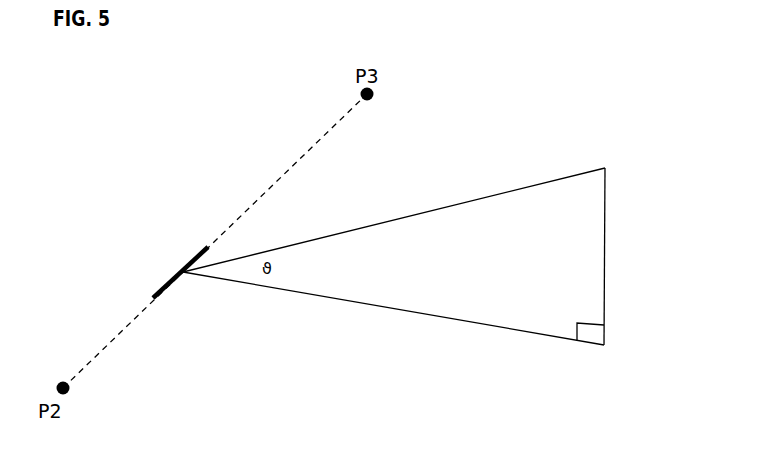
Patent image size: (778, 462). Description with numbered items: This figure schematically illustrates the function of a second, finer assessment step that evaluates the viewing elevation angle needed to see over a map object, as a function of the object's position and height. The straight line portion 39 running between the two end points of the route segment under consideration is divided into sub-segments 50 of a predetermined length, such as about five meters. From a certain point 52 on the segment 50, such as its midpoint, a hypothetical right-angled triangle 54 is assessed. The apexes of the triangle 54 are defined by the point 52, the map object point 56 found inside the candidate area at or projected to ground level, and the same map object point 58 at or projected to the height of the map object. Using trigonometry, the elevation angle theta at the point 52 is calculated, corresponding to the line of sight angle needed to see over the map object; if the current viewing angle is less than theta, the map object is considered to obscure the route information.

The straight line portion 39 is at (283, 177).
The sub-segment 50 is at (188, 247).
The point on the segment 52 is at (180, 270).
The hypothetical right-angled triangle 54 is at (353, 284).
The map object point at ground level 56 is at (605, 342).
The map object point at object height 58 is at (605, 168).